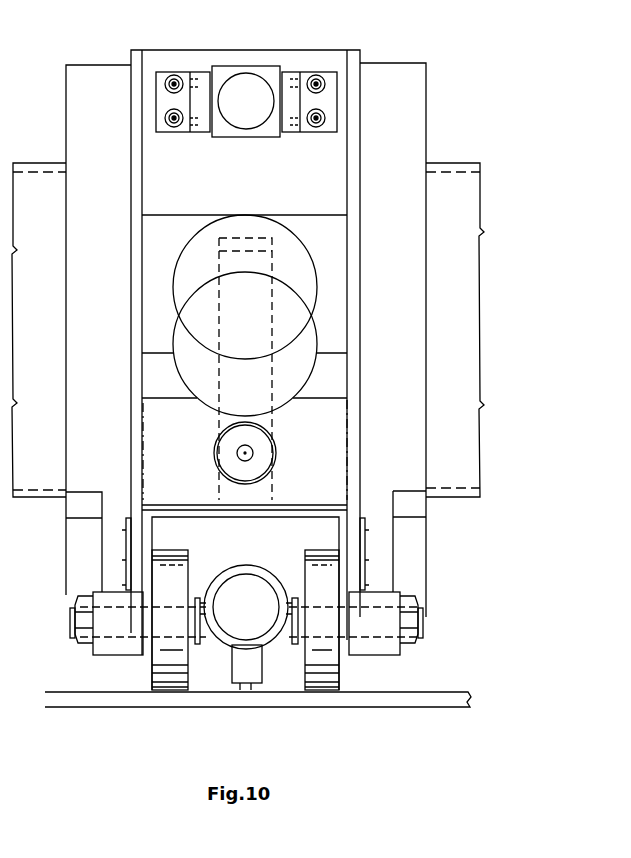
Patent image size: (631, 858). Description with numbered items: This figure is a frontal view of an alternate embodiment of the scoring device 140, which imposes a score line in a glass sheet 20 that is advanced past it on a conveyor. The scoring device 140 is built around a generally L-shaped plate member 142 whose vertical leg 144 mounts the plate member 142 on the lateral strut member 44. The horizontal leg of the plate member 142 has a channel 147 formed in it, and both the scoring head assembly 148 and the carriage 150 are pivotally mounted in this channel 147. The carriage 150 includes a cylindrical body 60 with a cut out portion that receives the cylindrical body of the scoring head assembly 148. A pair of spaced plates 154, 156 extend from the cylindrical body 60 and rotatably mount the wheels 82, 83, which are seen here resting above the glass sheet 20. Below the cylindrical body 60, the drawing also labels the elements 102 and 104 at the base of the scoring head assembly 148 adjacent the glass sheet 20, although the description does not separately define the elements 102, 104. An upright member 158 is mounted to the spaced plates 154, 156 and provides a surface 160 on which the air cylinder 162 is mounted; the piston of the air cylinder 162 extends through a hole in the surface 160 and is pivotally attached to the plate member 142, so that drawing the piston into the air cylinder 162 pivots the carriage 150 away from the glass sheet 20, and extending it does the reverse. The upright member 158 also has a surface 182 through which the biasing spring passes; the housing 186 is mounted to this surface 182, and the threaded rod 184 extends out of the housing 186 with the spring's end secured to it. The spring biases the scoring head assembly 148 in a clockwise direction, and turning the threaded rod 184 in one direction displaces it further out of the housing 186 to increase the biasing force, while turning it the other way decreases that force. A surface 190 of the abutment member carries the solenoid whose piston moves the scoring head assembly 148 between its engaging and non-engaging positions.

The glass sheet 20 is at (456, 680).
The lateral strut member 44 is at (466, 157).
The cylindrical body 60 is at (310, 547).
The wheel 82 is at (166, 690).
The wheel 83 is at (333, 690).
The bearing base 102 is at (252, 677).
The bearing foot 104 is at (243, 685).
The scoring device 140 is at (432, 371).
The plate member 142 is at (93, 48).
The vertical leg 144 is at (426, 103).
The channel 147 is at (126, 538).
The scoring head assembly 148 is at (280, 668).
The carriage 150 is at (78, 655).
The spaced plate 154 is at (140, 652).
The spaced plate 156 is at (353, 652).
The upright member 158 is at (127, 428).
The surface 160 is at (262, 184).
The air cylinder 162 is at (250, 80).
The surface 182 is at (329, 489).
The threaded rod 184 is at (254, 448).
The housing 186 is at (214, 455).
The surface 190 is at (342, 239).